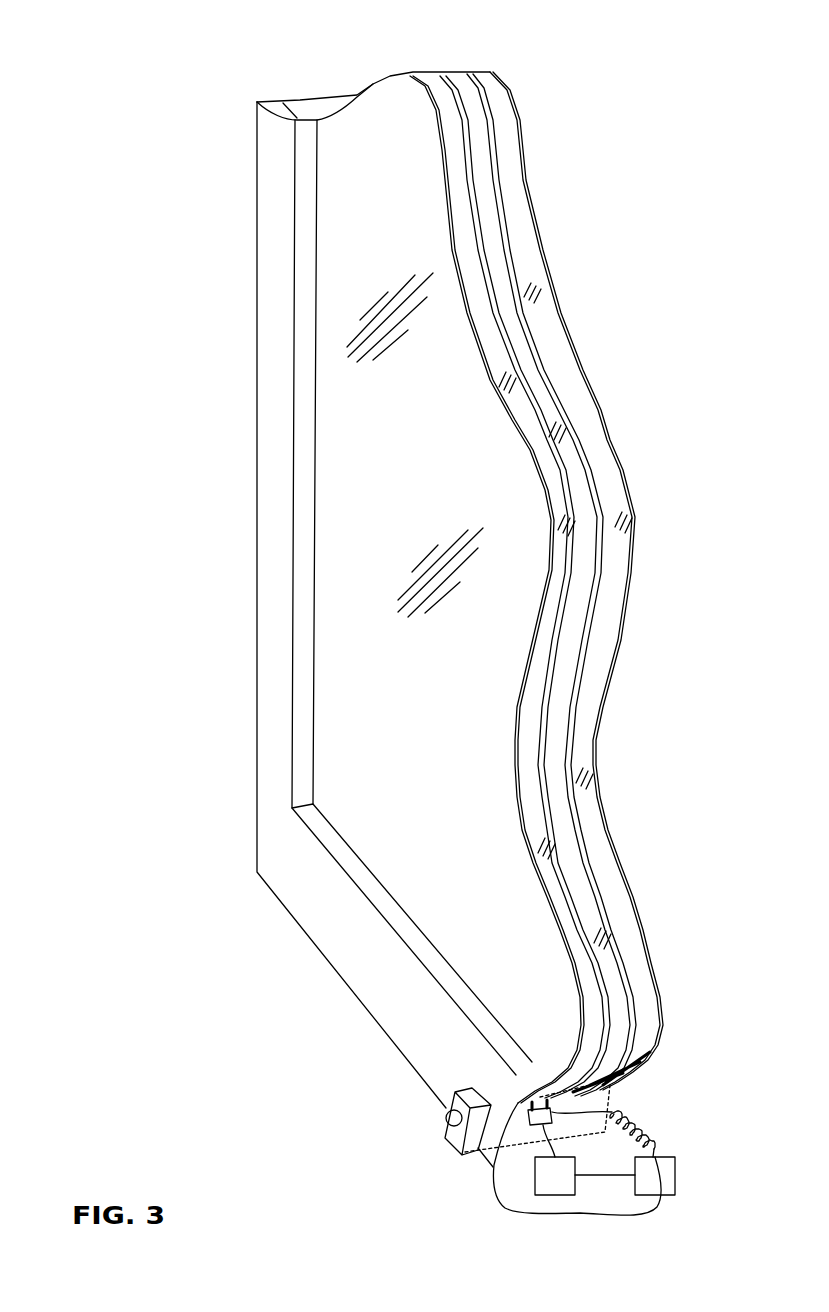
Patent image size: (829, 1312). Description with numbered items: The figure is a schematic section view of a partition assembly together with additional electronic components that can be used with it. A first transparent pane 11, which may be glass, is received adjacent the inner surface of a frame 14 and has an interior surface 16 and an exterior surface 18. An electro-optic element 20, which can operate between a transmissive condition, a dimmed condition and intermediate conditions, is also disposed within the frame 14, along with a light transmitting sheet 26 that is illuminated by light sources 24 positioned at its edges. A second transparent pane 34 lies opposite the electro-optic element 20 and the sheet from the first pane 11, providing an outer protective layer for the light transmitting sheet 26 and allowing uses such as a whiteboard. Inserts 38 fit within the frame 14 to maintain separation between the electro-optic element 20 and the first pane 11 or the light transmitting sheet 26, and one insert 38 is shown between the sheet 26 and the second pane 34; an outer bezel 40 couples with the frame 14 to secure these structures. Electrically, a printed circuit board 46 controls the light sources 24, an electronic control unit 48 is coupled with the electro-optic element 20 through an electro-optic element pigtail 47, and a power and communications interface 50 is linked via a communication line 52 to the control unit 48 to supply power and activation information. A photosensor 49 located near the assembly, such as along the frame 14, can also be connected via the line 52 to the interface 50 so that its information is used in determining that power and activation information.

The first transparent pane 11 is at (484, 554).
The frame 14 is at (322, 93).
The interior surface 16 is at (614, 552).
The exterior surface 18 is at (623, 618).
The electro-optic element 20 is at (578, 675).
The light sources 24 is at (518, 1076).
The light transmitting sheet 26 is at (545, 797).
The second transparent pane 34 is at (337, 715).
The inserts 38 is at (600, 1085).
The outer bezel 40 is at (320, 910).
The printed circuit board 46 is at (543, 1115).
The electro-optic element pigtail 47 is at (655, 1128).
The electronic control unit 48 is at (543, 1187).
The photosensor 49 is at (438, 1119).
The power and communications interface 50 is at (643, 1187).
The communication line 52 is at (493, 1185).